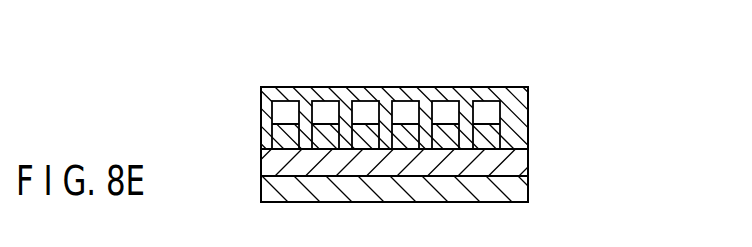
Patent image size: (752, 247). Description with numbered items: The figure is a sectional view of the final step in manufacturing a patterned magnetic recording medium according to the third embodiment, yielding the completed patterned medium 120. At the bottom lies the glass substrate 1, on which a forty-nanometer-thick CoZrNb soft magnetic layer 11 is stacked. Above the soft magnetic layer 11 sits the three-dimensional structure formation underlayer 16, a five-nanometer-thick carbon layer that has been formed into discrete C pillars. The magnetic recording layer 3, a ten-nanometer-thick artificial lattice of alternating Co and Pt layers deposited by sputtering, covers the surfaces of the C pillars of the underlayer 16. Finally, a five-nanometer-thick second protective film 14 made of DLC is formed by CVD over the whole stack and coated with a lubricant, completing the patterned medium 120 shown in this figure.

The patterned medium 120 is at (597, 122).
The second protective film 14 is at (463, 95).
The magnetic recording layer 3 is at (488, 105).
The three-dimensional structure formation underlayer 16 is at (490, 135).
The soft magnetic layer 11 is at (520, 162).
The glass substrate 1 is at (520, 188).